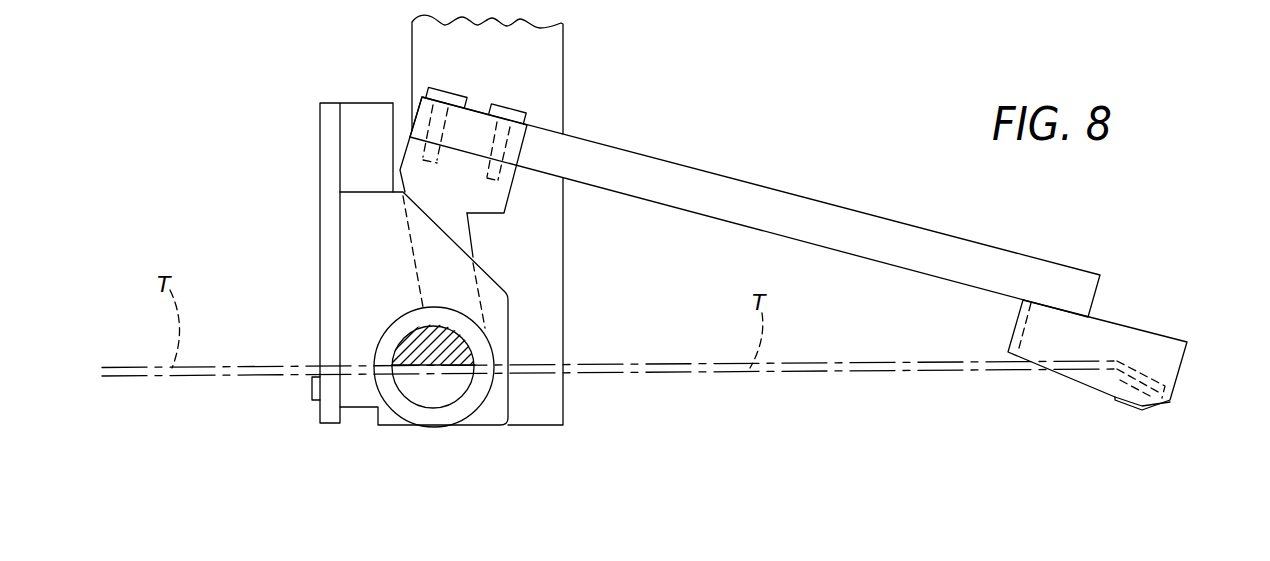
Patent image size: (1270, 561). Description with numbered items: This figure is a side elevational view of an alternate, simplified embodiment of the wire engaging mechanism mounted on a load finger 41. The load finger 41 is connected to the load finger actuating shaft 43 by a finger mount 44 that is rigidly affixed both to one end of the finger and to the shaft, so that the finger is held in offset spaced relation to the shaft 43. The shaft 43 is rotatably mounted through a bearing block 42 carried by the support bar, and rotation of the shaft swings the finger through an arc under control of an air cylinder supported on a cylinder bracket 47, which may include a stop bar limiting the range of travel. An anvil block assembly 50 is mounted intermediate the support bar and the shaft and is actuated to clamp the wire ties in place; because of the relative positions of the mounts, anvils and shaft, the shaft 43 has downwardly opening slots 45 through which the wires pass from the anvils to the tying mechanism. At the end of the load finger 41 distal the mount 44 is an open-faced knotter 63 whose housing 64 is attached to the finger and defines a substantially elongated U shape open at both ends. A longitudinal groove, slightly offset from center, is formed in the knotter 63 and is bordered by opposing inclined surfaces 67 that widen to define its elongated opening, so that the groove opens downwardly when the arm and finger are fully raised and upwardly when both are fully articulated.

The load finger 41 is at (758, 197).
The bearing block 42 is at (498, 310).
The load finger actuating shaft 43 is at (428, 335).
The finger mount 44 is at (485, 200).
The downwardly opening slot 45 is at (422, 366).
The cylinder bracket 47 is at (553, 50).
The anvil block assembly 50 is at (320, 310).
The knotter 63 is at (1148, 342).
The housing 64 is at (1172, 367).
The inclined surface 67 is at (255, 552).